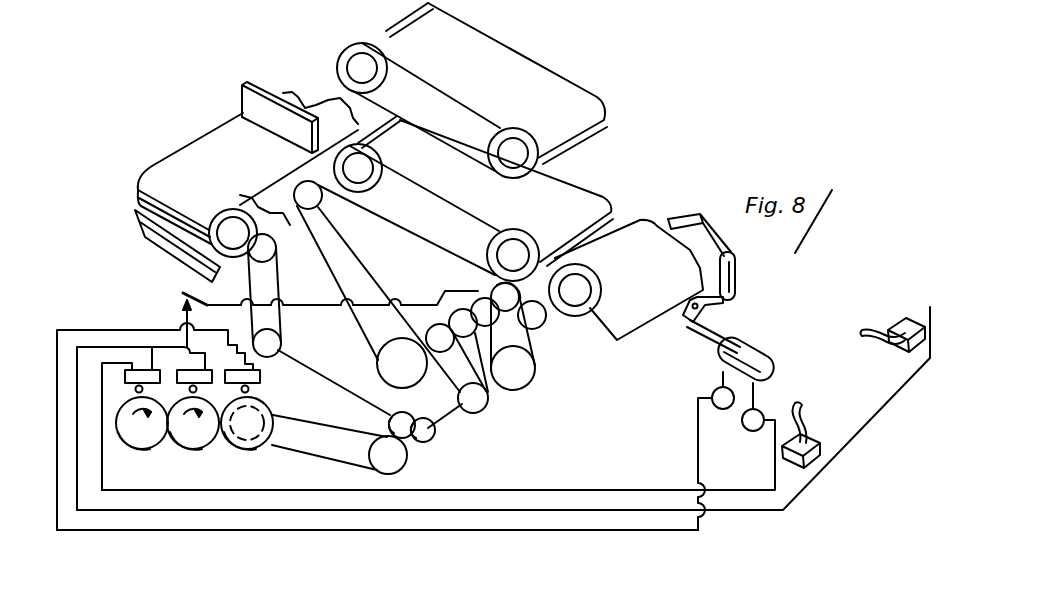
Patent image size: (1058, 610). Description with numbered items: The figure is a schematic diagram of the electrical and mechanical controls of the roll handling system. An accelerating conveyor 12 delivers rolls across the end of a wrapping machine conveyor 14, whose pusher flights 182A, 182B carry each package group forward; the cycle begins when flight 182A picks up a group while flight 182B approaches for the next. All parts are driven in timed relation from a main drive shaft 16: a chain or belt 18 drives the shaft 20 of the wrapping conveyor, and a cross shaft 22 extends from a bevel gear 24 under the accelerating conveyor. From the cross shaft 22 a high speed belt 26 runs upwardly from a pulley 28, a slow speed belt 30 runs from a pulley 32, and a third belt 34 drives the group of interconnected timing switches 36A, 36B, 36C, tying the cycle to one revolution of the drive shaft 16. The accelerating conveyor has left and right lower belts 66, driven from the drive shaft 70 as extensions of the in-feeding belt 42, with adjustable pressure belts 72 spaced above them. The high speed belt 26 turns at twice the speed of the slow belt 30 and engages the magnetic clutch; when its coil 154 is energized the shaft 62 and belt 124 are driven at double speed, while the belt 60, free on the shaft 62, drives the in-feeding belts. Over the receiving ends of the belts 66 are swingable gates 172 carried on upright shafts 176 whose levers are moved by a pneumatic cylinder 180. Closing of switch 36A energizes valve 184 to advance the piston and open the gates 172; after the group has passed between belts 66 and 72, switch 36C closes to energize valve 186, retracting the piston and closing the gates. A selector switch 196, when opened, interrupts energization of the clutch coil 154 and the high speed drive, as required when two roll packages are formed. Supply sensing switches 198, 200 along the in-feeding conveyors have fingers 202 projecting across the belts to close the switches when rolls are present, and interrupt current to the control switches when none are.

The accelerating conveyor 12 is at (548, 52).
The wrapping machine conveyor 14 is at (167, 141).
The main drive shaft 16 is at (343, 390).
The chain or belt 18 is at (279, 283).
The shaft of the wrapping conveyor 20 is at (266, 246).
The cross shaft 22 is at (443, 415).
The bevel gear 24 is at (427, 440).
The high speed belt 26 is at (500, 330).
The pulley 28 is at (518, 382).
The slow speed belt 30 is at (442, 375).
The pulley 32 is at (483, 402).
The third belt 34 is at (308, 456).
The timing switch 36A is at (135, 443).
The timing switch 36B is at (187, 443).
The timing switch 36C is at (248, 445).
The in-feeding belt 42 is at (645, 222).
The belt 60 is at (513, 328).
The shaft 62 is at (398, 365).
The lower belt 66 is at (586, 196).
The drive shaft 70 is at (340, 203).
The pressure belt 72 is at (566, 91).
The belt 124 is at (375, 268).
The magnetic coil 154 is at (493, 283).
The gate 172 is at (690, 218).
The upright shaft 176 is at (730, 288).
The pneumatic cylinder 180 is at (742, 345).
The pusher flight 182A is at (256, 92).
The pusher flight 182B is at (173, 258).
The valve 184 is at (763, 413).
The valve 186 is at (715, 391).
The selector switch 196 is at (183, 293).
The supply sensing switch 198 is at (815, 438).
The supply sensing switch 200 is at (893, 345).
The finger 202 is at (887, 330).